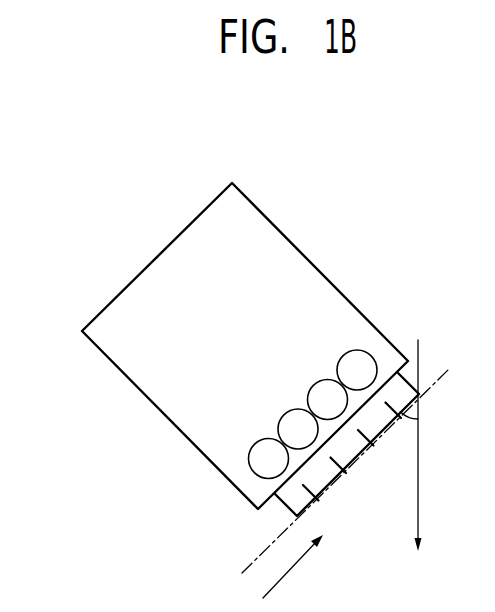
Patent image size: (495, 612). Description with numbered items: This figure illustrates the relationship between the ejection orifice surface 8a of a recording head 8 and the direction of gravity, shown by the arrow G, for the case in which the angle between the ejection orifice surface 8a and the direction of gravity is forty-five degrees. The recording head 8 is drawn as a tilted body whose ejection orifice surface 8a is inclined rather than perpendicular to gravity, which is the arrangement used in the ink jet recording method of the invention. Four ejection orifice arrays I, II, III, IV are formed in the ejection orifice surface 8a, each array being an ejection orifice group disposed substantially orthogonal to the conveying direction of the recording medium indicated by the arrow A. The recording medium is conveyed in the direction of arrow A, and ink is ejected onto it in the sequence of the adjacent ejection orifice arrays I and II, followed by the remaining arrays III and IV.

The recording head 8 is at (262, 233).
The ejection orifice surface 8a is at (290, 508).
The ejection orifice array I is at (316, 505).
The ejection orifice array II is at (345, 478).
The ejection orifice array III is at (373, 454).
The ejection orifice array IV is at (401, 428).
The direction of gravity G is at (407, 445).
The conveying direction A is at (293, 566).